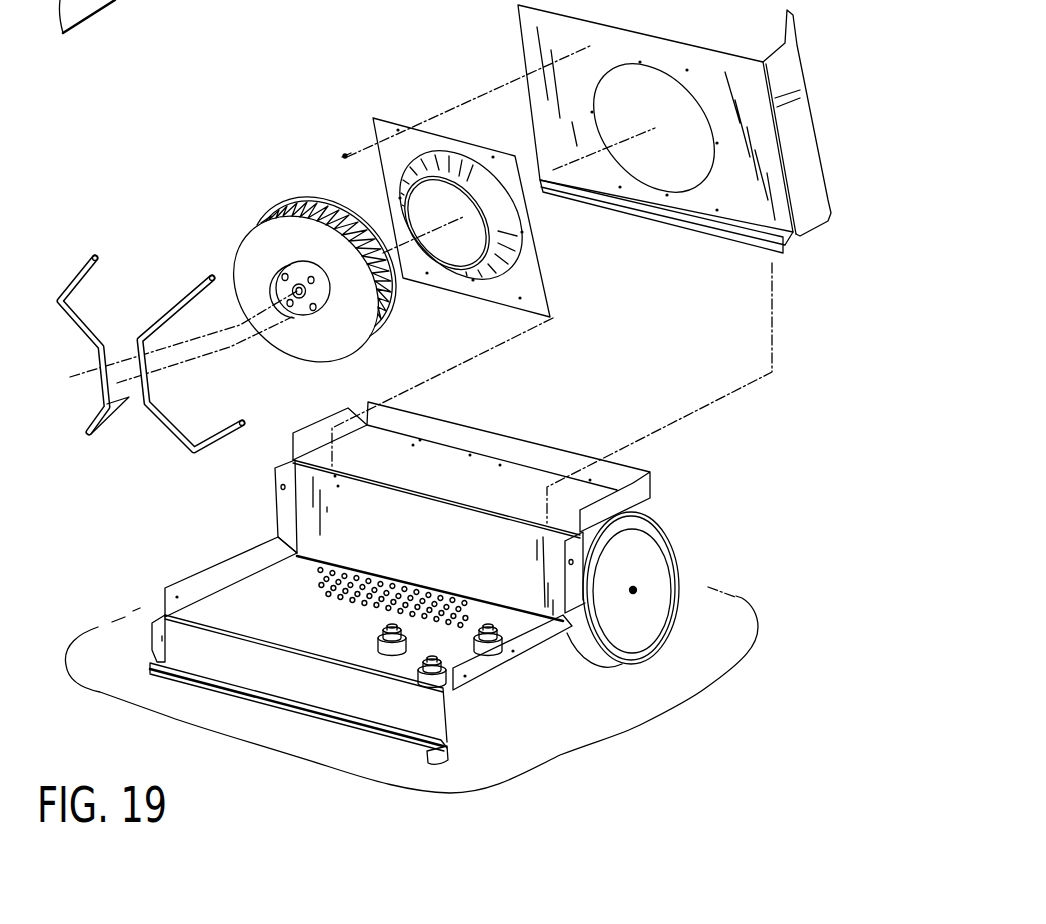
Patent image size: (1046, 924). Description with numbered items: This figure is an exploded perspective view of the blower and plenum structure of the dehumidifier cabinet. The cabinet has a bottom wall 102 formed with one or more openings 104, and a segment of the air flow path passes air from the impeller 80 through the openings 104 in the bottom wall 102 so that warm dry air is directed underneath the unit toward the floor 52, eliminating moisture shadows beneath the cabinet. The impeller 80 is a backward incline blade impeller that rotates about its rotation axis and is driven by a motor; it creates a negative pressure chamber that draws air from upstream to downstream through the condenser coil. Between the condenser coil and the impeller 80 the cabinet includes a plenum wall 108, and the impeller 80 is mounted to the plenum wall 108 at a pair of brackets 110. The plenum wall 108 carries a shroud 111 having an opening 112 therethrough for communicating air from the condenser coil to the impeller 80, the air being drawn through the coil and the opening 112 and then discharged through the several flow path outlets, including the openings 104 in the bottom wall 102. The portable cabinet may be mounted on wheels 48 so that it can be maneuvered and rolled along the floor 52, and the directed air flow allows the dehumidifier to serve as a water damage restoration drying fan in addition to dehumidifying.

The wheels 48 is at (666, 532).
The floor 52 is at (641, 712).
The impeller 80 is at (265, 217).
The bottom wall 102 is at (348, 650).
The openings 104 is at (444, 598).
The plenum wall 108 is at (676, 42).
The brackets 110 is at (155, 318).
The shroud 111 is at (384, 121).
The opening 112 is at (473, 192).